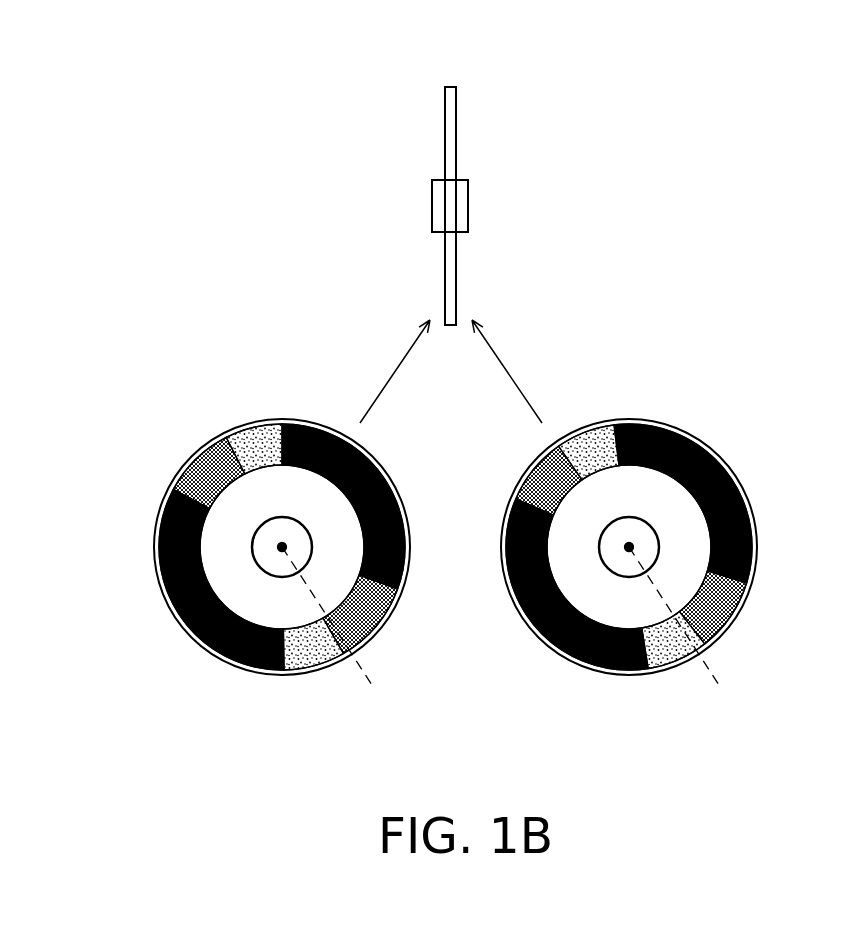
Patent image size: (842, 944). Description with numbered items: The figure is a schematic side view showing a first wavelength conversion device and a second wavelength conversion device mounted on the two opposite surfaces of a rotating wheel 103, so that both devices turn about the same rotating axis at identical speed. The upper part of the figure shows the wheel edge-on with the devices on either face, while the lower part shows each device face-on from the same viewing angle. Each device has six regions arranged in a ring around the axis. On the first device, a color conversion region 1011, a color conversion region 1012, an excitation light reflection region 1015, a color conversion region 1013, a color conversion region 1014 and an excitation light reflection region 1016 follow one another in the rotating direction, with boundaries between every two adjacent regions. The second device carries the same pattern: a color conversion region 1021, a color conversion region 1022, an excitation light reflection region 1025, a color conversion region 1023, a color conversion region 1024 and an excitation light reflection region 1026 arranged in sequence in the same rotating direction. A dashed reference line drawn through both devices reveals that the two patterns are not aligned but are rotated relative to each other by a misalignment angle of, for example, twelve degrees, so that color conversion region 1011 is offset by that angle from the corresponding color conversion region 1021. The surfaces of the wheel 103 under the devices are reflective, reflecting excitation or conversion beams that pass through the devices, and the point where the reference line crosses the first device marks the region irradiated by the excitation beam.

The rotating wheel 103 is at (460, 77).
The color conversion region 1011 is at (392, 503).
The color conversion region 1012 is at (383, 617).
The color conversion region 1013 is at (178, 617).
The color conversion region 1014 is at (193, 467).
The excitation light reflection region 1015 is at (312, 660).
The excitation light reflection region 1016 is at (253, 432).
The color conversion region 1021 is at (742, 503).
The color conversion region 1022 is at (733, 615).
The color conversion region 1023 is at (550, 648).
The color conversion region 1024 is at (540, 460).
The excitation light reflection region 1025 is at (670, 660).
The excitation light reflection region 1026 is at (590, 432).